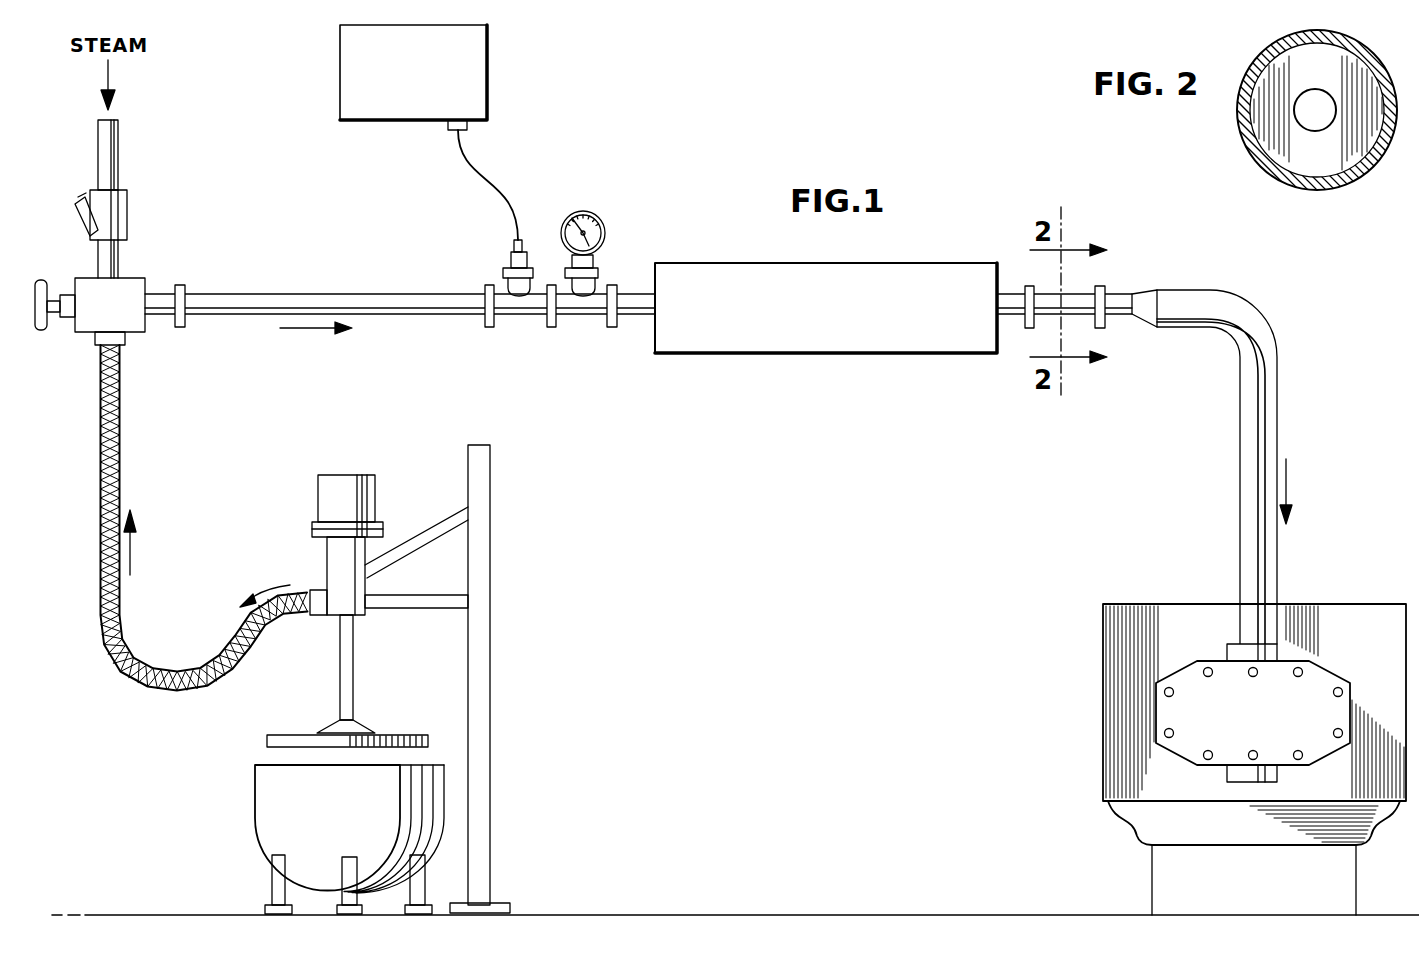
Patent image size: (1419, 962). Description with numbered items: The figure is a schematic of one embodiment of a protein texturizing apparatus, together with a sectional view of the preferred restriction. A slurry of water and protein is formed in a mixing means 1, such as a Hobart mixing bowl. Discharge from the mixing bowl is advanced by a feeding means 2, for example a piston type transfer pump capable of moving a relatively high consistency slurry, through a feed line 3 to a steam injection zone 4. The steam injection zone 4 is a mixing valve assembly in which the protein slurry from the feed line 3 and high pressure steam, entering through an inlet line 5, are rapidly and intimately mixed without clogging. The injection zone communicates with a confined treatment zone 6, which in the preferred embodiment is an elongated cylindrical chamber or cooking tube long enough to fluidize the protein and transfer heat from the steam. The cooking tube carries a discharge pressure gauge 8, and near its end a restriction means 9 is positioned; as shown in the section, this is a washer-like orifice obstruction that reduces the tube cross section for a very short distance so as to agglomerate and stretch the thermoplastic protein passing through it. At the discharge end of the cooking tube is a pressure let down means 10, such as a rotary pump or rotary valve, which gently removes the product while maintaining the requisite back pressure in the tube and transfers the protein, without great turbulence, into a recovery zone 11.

In FIG. 1, the mixing means 1 is at (272, 793).
In FIG. 1, the feeding means 2 is at (350, 475).
In FIG. 1, the feed line 3 is at (118, 455).
In FIG. 1, the steam injection zone 4 is at (125, 298).
In FIG. 1, the inlet line 5 is at (118, 158).
In FIG. 1, the treatment zone 6 is at (275, 296).
In FIG. 1, the discharge pressure gauge 8 is at (578, 210).
In FIG. 1, the restriction means 9 is at (1068, 312).
In FIG. 2, the restriction means 9 is at (1280, 142).
In FIG. 1, the pressure let down means 10 is at (1113, 650).
In FIG. 1, the recovery zone 11 is at (1143, 826).